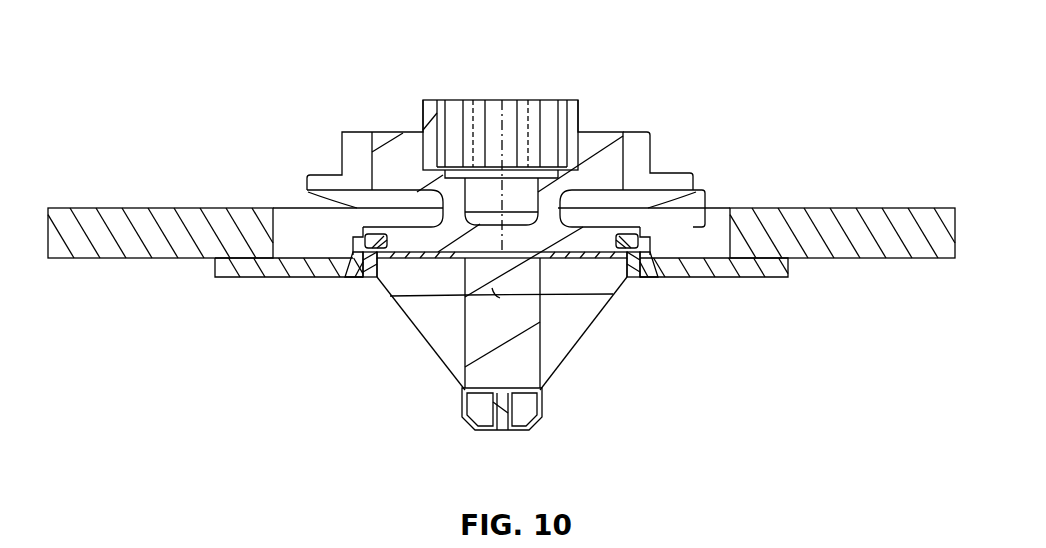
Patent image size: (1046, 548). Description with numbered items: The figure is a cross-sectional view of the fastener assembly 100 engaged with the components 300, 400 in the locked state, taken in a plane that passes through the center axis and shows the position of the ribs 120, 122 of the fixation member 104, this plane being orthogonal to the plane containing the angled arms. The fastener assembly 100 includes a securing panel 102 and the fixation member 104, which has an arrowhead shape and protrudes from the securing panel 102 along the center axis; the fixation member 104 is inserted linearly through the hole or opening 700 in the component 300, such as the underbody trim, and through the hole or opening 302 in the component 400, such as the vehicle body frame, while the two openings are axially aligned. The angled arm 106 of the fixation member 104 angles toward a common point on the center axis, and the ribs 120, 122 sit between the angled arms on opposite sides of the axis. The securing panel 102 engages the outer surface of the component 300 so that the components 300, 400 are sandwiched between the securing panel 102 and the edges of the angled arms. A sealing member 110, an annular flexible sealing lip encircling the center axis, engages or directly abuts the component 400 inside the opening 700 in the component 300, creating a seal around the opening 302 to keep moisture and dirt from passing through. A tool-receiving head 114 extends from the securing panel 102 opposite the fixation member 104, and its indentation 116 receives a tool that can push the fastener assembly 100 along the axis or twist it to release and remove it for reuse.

The hole or opening 700 is at (730, 208).
The fastener assembly 100 is at (404, 98).
The securing panel 102 is at (655, 170).
The fixation member 104 is at (338, 237).
The angled arm 106 is at (510, 299).
The sealing member 110 is at (655, 272).
The tool-receiving head 114 is at (553, 100).
The indentation 116 is at (498, 116).
The rib 120 is at (420, 316).
The rib 122 is at (576, 317).
The component 300 is at (902, 220).
The hole or opening 302 is at (510, 299).
The component 400 is at (778, 273).